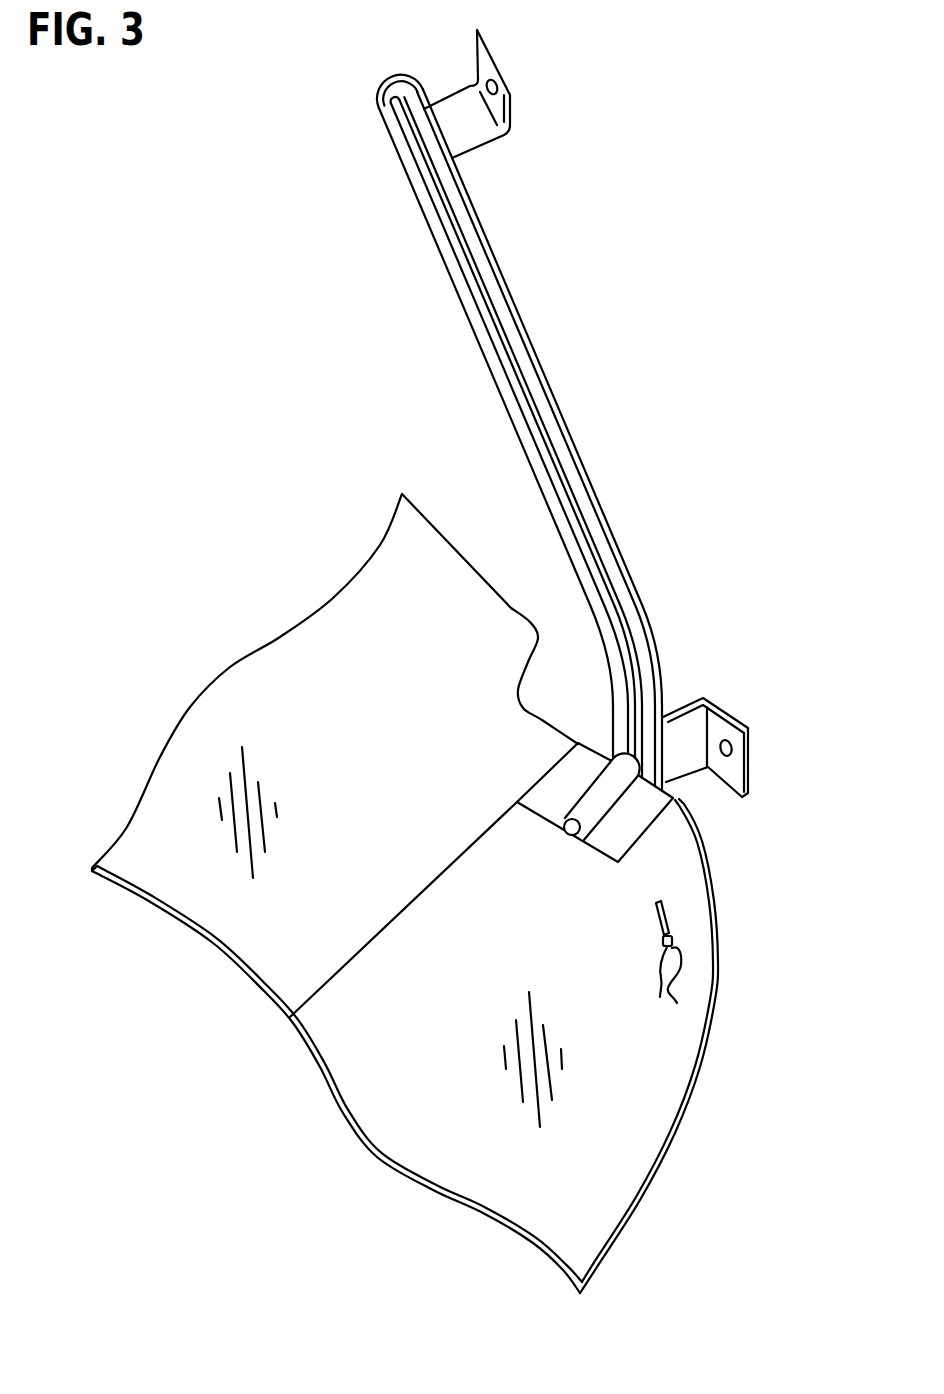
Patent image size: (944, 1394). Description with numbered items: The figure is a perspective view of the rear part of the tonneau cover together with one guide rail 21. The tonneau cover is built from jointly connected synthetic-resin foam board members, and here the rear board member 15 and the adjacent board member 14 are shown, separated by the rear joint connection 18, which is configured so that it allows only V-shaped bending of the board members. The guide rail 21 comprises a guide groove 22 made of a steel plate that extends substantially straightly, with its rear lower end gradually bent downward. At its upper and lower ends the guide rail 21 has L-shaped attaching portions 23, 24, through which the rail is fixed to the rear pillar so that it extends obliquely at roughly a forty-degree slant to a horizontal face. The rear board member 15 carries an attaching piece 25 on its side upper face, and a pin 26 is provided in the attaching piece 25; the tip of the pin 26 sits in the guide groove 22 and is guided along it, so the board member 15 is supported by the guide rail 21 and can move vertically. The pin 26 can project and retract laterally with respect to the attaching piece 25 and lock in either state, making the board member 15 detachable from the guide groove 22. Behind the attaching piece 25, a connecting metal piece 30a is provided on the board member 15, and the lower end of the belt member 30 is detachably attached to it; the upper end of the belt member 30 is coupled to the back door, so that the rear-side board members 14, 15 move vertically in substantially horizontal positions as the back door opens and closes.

The board member 14 is at (342, 618).
The rear board member 15 is at (585, 1185).
The rear joint connection 18 is at (361, 956).
The guide rail 21 is at (597, 465).
The guide groove 22 is at (458, 250).
The attaching portion 23 is at (499, 53).
The attaching portion 24 is at (752, 758).
The attaching piece 25 is at (632, 830).
The pin 26 is at (572, 835).
The belt member 30 is at (686, 971).
The connecting metal piece 30a is at (681, 995).